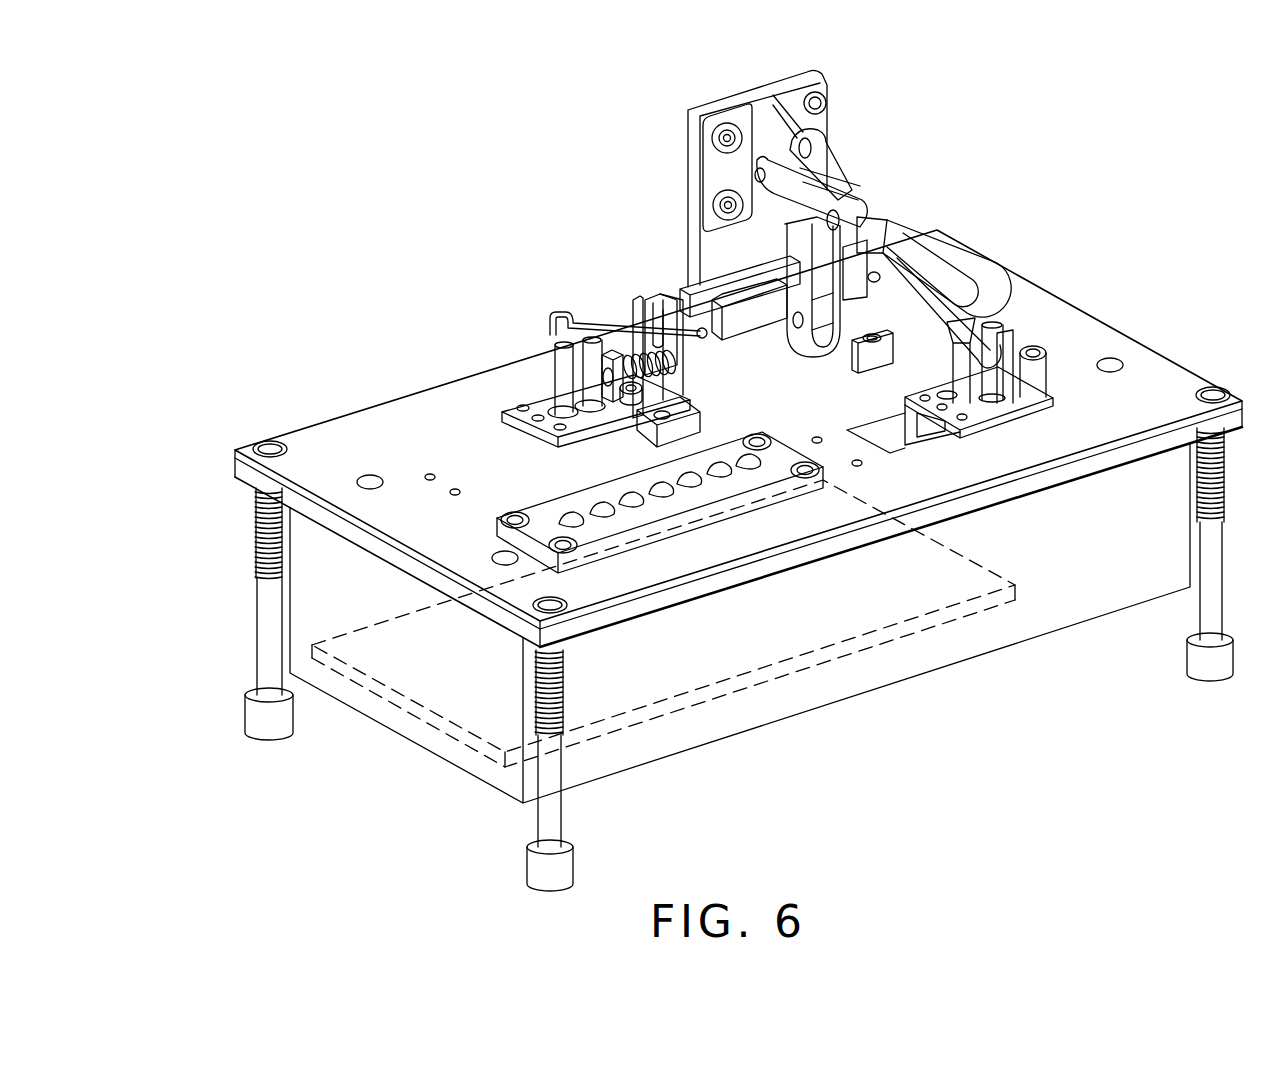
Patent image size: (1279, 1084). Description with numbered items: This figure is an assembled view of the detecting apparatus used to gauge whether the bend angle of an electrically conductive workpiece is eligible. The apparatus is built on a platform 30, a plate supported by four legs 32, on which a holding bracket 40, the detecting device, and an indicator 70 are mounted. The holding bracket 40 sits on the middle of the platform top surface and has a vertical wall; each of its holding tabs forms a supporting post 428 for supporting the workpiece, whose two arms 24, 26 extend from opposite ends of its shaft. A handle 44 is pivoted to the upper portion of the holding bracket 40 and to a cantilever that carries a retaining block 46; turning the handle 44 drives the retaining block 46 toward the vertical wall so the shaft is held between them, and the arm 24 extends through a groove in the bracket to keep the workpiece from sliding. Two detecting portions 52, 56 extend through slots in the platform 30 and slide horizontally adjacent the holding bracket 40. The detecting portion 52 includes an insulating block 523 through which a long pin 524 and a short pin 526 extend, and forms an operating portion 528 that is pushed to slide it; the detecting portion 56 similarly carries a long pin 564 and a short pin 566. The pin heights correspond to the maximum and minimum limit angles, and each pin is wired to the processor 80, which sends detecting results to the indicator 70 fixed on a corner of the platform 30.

The arm 24 is at (605, 320).
The arm 26 is at (933, 317).
The platform 30 is at (808, 547).
The legs 32 is at (276, 641).
The holding bracket 40 is at (727, 253).
The handle 44 is at (930, 265).
The retaining block 46 is at (740, 320).
The detecting portion 52 is at (1010, 405).
The detecting portion 56 is at (540, 403).
The indicator 70 is at (680, 503).
The processor 80 is at (423, 688).
The supporting post 428 is at (687, 328).
The insulating block 523 is at (923, 430).
The long pin 524 is at (990, 340).
The short pin 526 is at (958, 390).
The operating portion 528 is at (1040, 378).
The long pin 564 is at (567, 377).
The short pin 566 is at (590, 357).